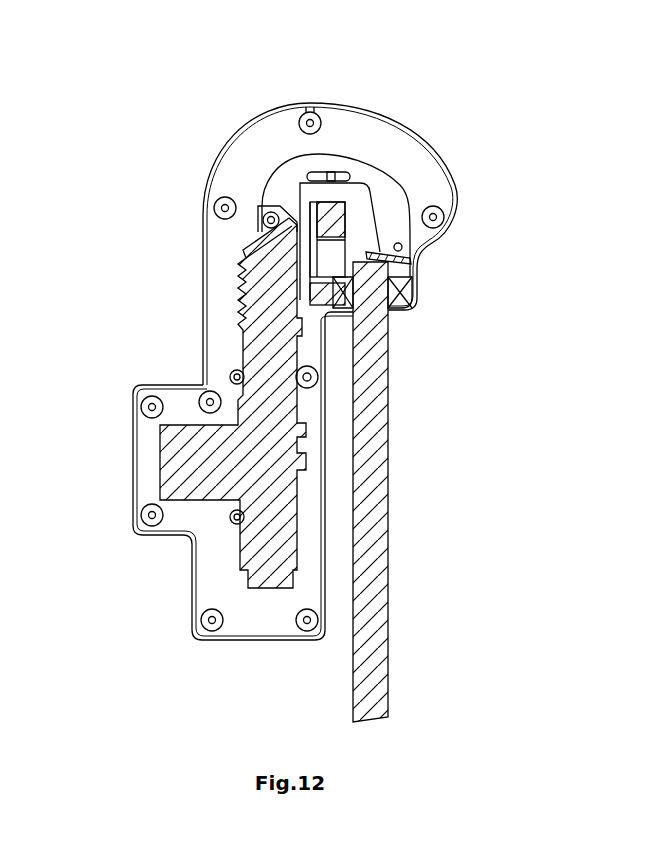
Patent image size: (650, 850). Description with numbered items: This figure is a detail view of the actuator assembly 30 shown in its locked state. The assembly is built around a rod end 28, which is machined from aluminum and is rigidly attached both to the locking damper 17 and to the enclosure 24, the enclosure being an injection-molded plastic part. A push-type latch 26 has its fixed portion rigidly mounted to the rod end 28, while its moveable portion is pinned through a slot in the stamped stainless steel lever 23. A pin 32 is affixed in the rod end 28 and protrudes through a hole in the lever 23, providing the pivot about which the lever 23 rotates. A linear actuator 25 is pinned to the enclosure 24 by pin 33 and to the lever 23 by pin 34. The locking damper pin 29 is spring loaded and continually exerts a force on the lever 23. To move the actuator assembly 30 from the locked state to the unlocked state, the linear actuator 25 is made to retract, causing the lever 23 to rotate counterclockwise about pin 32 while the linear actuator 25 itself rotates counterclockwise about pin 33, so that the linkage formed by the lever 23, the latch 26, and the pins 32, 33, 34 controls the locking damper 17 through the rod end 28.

The locking damper 17 is at (388, 408).
The lever 23 is at (367, 170).
The enclosure 24 is at (308, 103).
The linear actuator 25 is at (250, 270).
The push-type latch 26 is at (353, 312).
The rod end 28 is at (395, 285).
The locking damper pin 29 is at (378, 255).
The actuator assembly 30 is at (193, 693).
The pin 32 is at (404, 249).
The pin 33 is at (268, 214).
The pin 34 is at (333, 172).